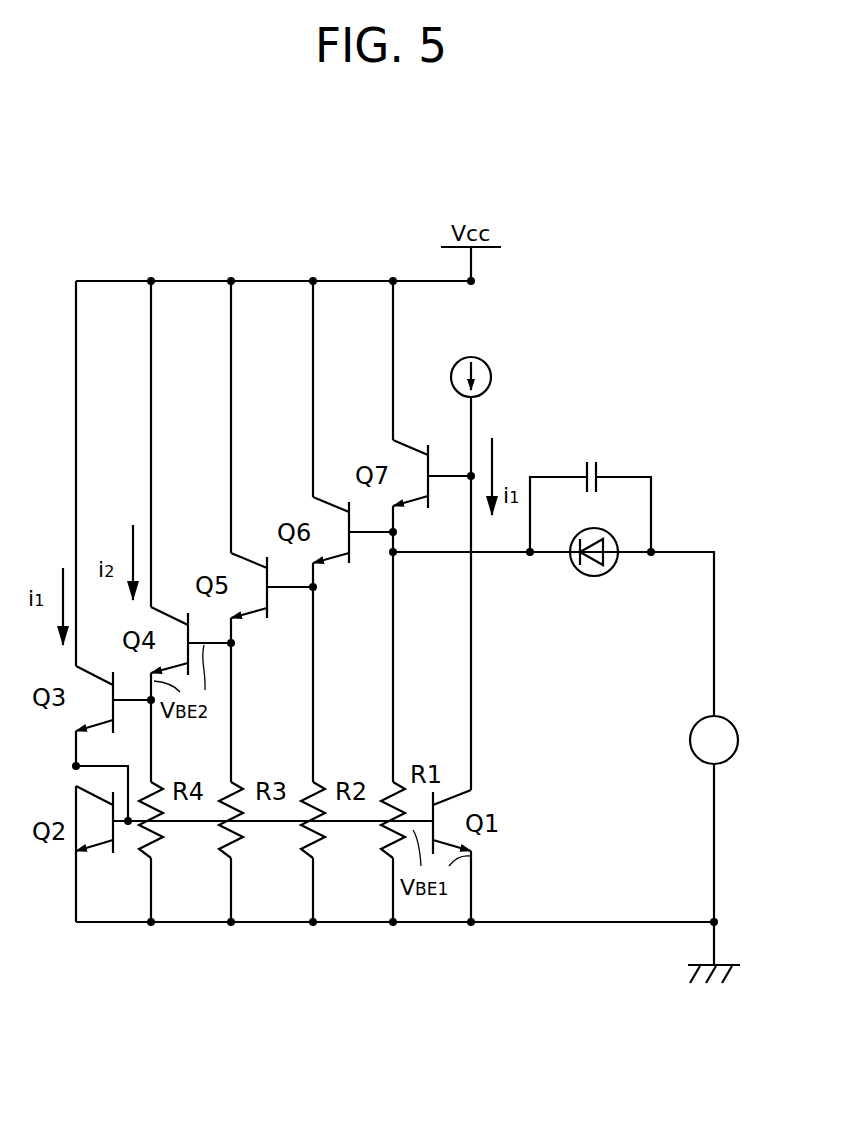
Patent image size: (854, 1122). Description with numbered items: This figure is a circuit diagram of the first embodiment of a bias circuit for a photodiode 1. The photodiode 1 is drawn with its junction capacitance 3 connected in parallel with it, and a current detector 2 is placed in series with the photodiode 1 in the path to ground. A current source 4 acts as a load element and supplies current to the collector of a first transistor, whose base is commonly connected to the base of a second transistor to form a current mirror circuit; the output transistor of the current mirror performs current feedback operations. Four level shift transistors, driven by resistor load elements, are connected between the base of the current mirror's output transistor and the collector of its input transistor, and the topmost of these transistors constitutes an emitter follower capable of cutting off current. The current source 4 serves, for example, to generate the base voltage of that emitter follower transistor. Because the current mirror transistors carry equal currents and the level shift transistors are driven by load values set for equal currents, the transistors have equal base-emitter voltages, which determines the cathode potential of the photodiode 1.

The photodiode 1 is at (592, 577).
The current detector 2 is at (730, 720).
The junction capacitance 3 is at (598, 470).
The current source 4 is at (488, 363).